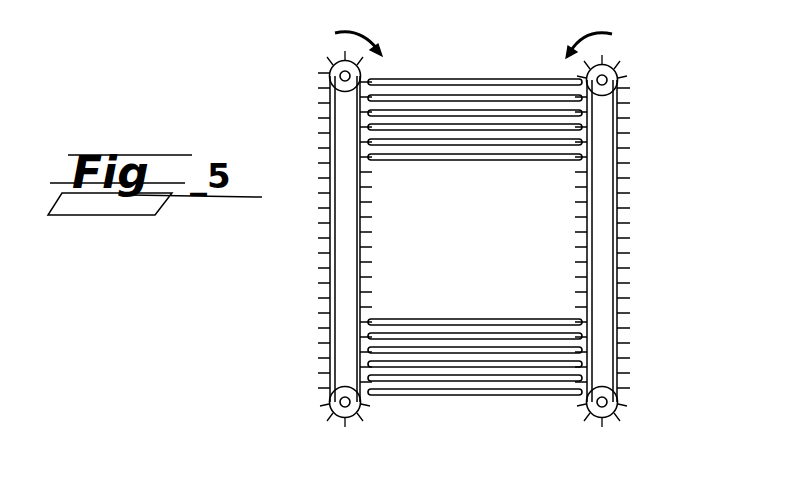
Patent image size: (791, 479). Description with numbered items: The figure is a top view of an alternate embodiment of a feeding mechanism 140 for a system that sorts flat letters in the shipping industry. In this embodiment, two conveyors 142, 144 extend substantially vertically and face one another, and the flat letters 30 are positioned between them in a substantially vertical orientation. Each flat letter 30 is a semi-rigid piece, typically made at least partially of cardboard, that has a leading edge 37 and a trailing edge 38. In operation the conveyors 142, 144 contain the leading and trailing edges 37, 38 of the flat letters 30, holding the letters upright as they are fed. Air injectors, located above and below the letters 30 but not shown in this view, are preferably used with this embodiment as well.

The flat letter 30 is at (500, 110).
The leading edge 37 is at (372, 128).
The trailing edge 38 is at (580, 128).
The feeding mechanism 140 is at (326, 61).
The conveyor 142 is at (318, 295).
The conveyor 144 is at (634, 292).